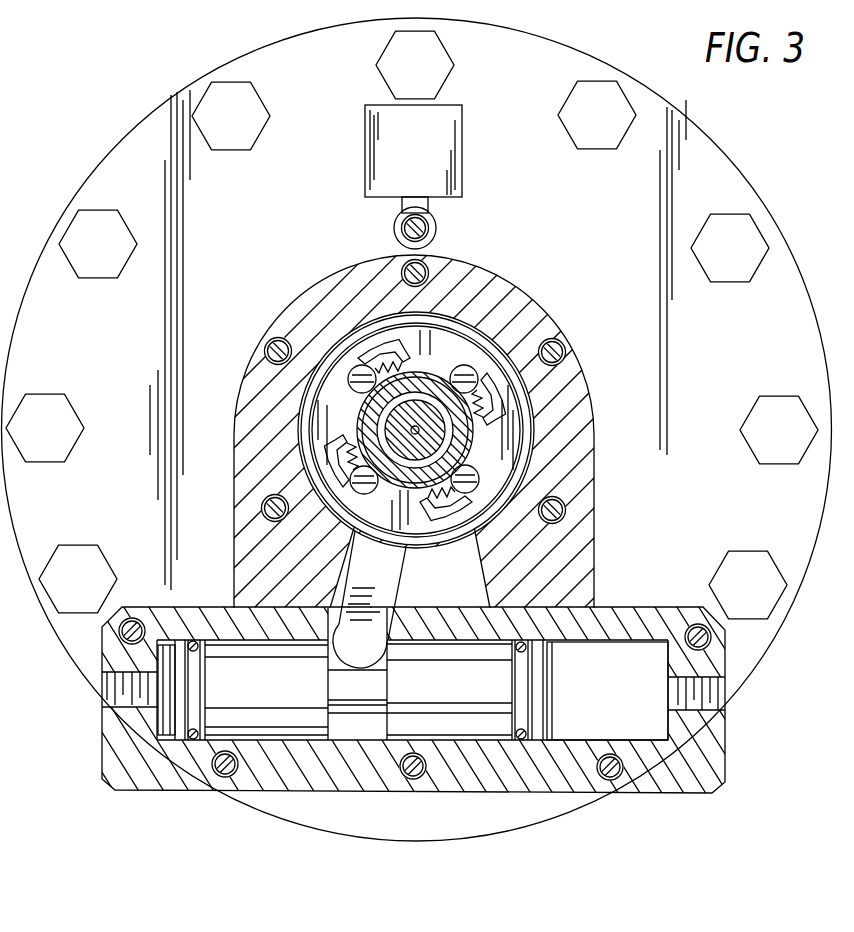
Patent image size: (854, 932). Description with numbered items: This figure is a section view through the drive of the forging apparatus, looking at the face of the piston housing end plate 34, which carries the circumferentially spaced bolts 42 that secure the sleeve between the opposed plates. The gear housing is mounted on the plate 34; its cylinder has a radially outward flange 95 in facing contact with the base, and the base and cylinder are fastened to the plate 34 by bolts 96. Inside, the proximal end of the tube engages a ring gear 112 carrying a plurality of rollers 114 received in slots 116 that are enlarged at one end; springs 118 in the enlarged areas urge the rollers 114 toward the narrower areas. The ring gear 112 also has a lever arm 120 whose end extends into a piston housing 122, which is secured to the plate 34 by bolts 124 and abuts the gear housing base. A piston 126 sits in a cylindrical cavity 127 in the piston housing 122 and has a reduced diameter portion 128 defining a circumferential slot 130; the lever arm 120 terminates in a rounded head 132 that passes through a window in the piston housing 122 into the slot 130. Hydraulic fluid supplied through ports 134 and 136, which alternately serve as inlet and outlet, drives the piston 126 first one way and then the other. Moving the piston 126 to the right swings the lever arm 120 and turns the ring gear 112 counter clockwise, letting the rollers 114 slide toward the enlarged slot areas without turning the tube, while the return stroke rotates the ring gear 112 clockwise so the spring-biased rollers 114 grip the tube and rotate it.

The plate 34 is at (784, 307).
The bolts 42 is at (744, 230).
The flange 95 is at (593, 542).
The bolts 96 is at (525, 388).
The ring gear 112 is at (510, 443).
The rollers 114 is at (465, 375).
The slots 116 is at (480, 400).
The springs 118 is at (505, 405).
The lever arm 120 is at (387, 583).
The piston housing 122 is at (525, 773).
The bolts 124 is at (222, 772).
The piston 126 is at (290, 723).
The cylindrical cavity 127 is at (662, 757).
The reduced diameter portion 128 is at (367, 700).
The circumferential slot 130 is at (338, 730).
The rounded head 132 is at (368, 647).
The port 134 is at (115, 697).
The port 136 is at (725, 699).